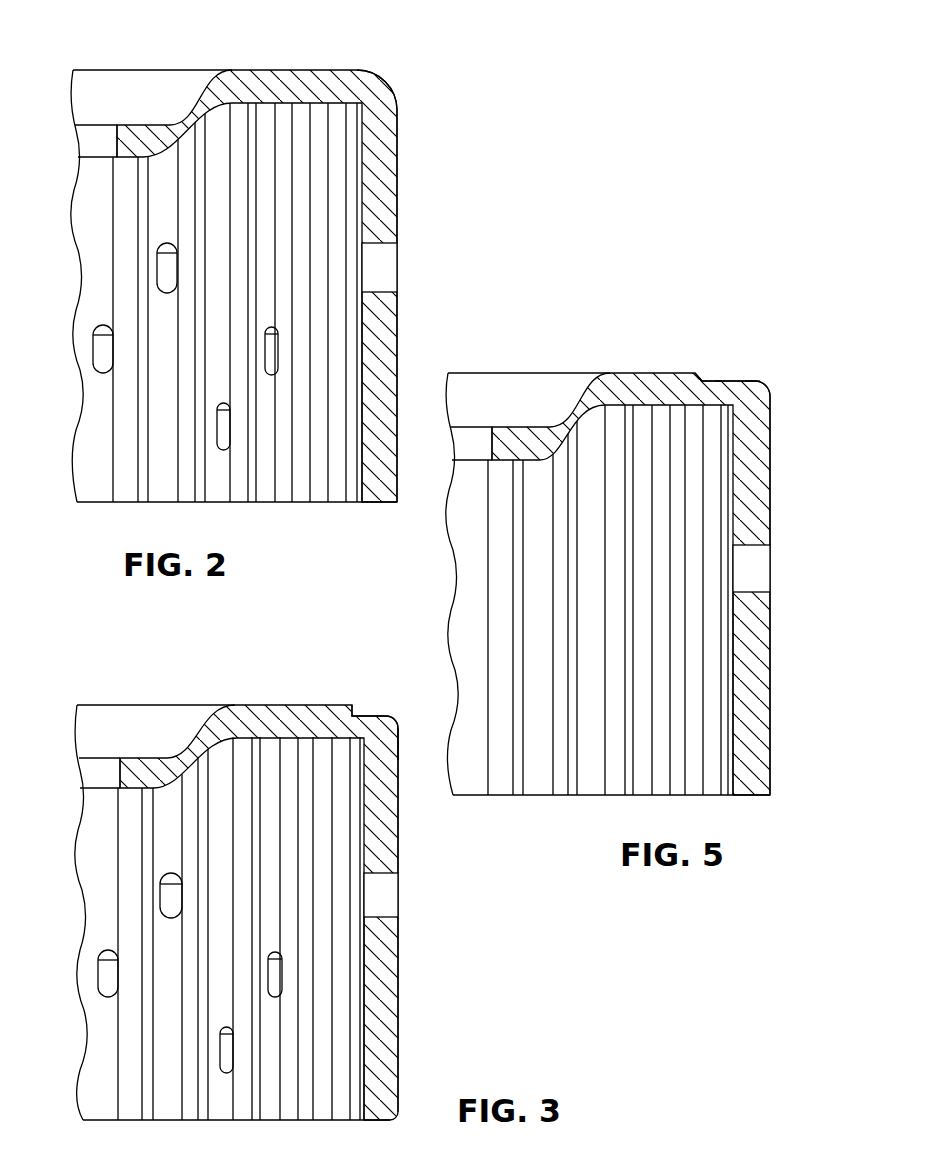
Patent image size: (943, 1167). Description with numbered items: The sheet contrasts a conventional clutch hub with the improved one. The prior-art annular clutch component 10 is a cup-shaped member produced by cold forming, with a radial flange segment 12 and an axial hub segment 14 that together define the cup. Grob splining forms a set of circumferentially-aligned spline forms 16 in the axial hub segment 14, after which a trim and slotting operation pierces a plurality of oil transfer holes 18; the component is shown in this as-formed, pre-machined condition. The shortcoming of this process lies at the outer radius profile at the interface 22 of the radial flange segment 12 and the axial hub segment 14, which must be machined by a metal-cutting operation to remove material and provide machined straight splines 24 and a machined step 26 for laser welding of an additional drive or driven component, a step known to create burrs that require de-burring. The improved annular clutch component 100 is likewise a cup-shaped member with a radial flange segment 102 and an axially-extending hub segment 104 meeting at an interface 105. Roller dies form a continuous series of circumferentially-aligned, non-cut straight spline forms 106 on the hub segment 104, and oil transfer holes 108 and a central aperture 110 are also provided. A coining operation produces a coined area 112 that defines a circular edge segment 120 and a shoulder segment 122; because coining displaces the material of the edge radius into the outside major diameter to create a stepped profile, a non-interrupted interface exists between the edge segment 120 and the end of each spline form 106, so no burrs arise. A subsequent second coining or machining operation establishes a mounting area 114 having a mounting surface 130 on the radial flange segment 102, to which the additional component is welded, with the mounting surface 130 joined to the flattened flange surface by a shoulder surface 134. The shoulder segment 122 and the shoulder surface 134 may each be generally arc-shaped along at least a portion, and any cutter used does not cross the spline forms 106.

In FIG. 2, the annular clutch component 10 is at (418, 88).
In FIG. 3, the annular clutch component 10 is at (76, 678).
In FIG. 2, the radial flange segment 12 is at (280, 66).
In FIG. 3, the radial flange segment 12 is at (279, 696).
In FIG. 2, the axial hub segment 14 is at (401, 193).
In FIG. 3, the axial hub segment 14 is at (406, 803).
In FIG. 2, the spline forms 16 is at (373, 460).
In FIG. 3, the spline forms 16 is at (393, 1062).
In FIG. 2, the oil transfer holes 18 is at (100, 350).
In FIG. 3, the oil transfer holes 18 is at (107, 978).
In FIG. 2, the interface 22 is at (112, 126).
In FIG. 3, the interface 22 is at (110, 768).
In FIG. 3, the machined straight splines 24 is at (406, 750).
In FIG. 3, the machined step 26 is at (367, 708).
In FIG. 5, the annular clutch component 100 is at (797, 410).
In FIG. 5, the radial flange segment 102 is at (621, 364).
In FIG. 5, the hub segment 104 is at (777, 703).
In FIG. 5, the interface 105 is at (775, 390).
In FIG. 5, the spline forms 106 is at (773, 747).
In FIG. 5, the oil transfer holes 108 is at (760, 555).
In FIG. 5, the central aperture 110 is at (487, 425).
In FIG. 5, the coined area 112 is at (770, 378).
In FIG. 5, the mounting area 114 is at (713, 376).
In FIG. 5, the circular edge segment 120 is at (757, 375).
In FIG. 5, the shoulder segment 122 is at (743, 380).
In FIG. 5, the mounting surface 130 is at (722, 380).
In FIG. 5, the shoulder surface 134 is at (697, 374).